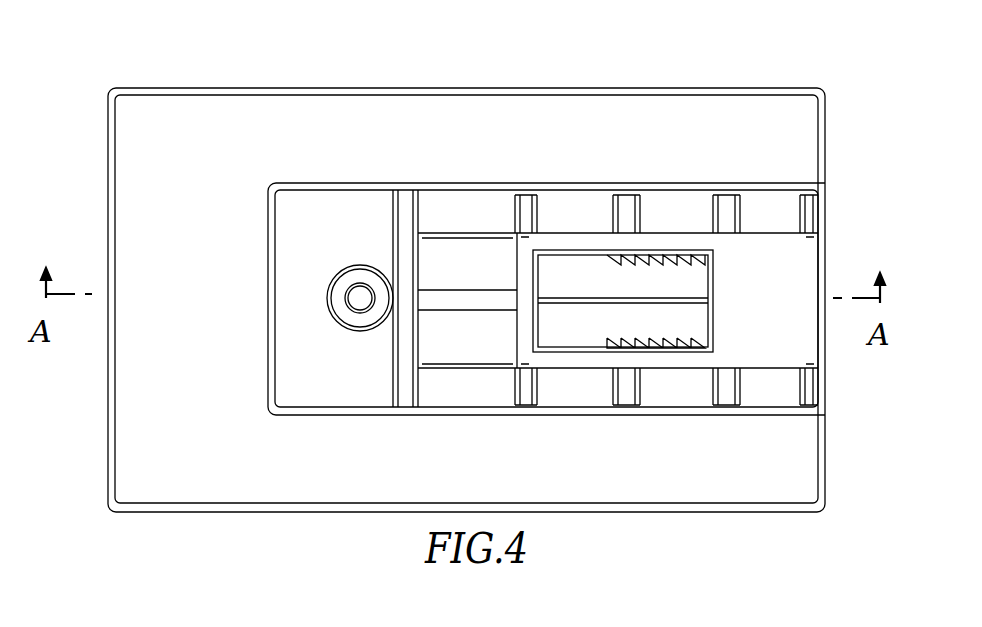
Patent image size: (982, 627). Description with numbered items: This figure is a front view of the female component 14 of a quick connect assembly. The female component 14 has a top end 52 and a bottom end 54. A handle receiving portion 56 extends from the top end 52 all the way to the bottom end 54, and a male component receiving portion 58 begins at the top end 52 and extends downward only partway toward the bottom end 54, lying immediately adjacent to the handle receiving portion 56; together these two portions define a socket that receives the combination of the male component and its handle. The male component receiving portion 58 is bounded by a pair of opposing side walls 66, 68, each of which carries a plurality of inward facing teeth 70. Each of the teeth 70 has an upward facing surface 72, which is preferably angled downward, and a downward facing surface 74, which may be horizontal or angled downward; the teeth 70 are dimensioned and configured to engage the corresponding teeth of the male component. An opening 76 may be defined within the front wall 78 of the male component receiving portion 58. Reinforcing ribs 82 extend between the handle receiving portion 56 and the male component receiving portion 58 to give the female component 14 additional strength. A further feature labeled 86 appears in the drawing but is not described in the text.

The female component 14 is at (578, 78).
The top end 52 is at (826, 213).
The bottom end 54 is at (336, 381).
The handle receiving portion 56 is at (777, 202).
The male component receiving portion 58 is at (722, 249).
The side wall 66 is at (558, 232).
The side wall 68 is at (587, 370).
The teeth 70 is at (652, 262).
The upward facing surface 72 is at (708, 262).
The downward facing surface 74 is at (633, 262).
The opening 76 is at (573, 283).
The front wall 78 is at (789, 338).
The reinforcing ribs 82 is at (514, 268).
The boss 86 is at (364, 290).